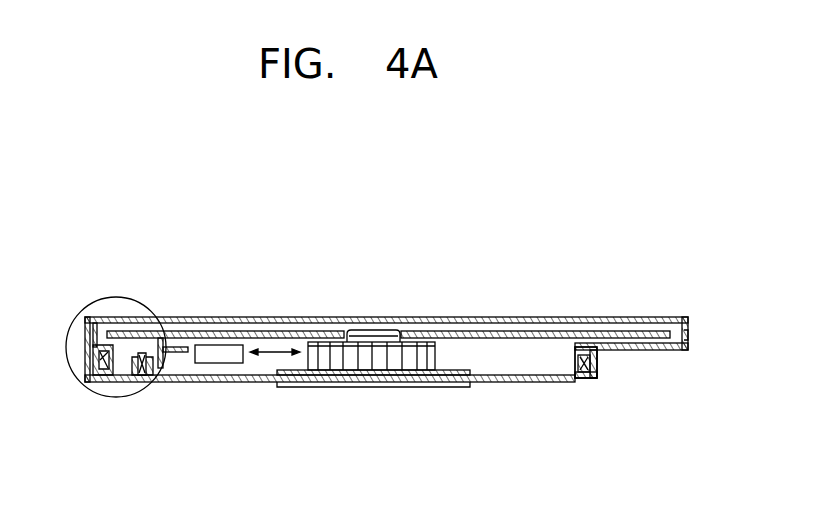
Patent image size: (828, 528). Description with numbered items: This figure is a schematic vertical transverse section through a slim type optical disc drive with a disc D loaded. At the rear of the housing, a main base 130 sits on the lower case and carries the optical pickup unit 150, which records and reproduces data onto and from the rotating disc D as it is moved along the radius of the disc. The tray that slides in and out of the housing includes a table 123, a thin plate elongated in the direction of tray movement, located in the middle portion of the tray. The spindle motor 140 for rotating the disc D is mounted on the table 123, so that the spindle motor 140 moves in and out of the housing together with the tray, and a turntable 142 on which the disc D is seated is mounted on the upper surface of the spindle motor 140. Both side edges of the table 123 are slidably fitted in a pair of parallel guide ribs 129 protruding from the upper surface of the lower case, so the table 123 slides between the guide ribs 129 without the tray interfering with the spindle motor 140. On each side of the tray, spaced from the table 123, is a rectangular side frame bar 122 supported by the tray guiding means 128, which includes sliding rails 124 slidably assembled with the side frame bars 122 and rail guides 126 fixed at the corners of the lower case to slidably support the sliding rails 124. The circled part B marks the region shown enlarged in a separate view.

The main base 130 is at (175, 317).
The disc D is at (272, 317).
The optical pickup unit 150 is at (220, 360).
The spindle motor 140 is at (378, 356).
The turntable 142 is at (423, 342).
The guide ribs 129 is at (276, 372).
The table 123 is at (370, 387).
The side frame bars 122 is at (580, 372).
The sliding rails 124 is at (586, 378).
The rail guides 126 is at (597, 365).
The tray guiding means 128 is at (683, 412).
The part B is at (112, 297).